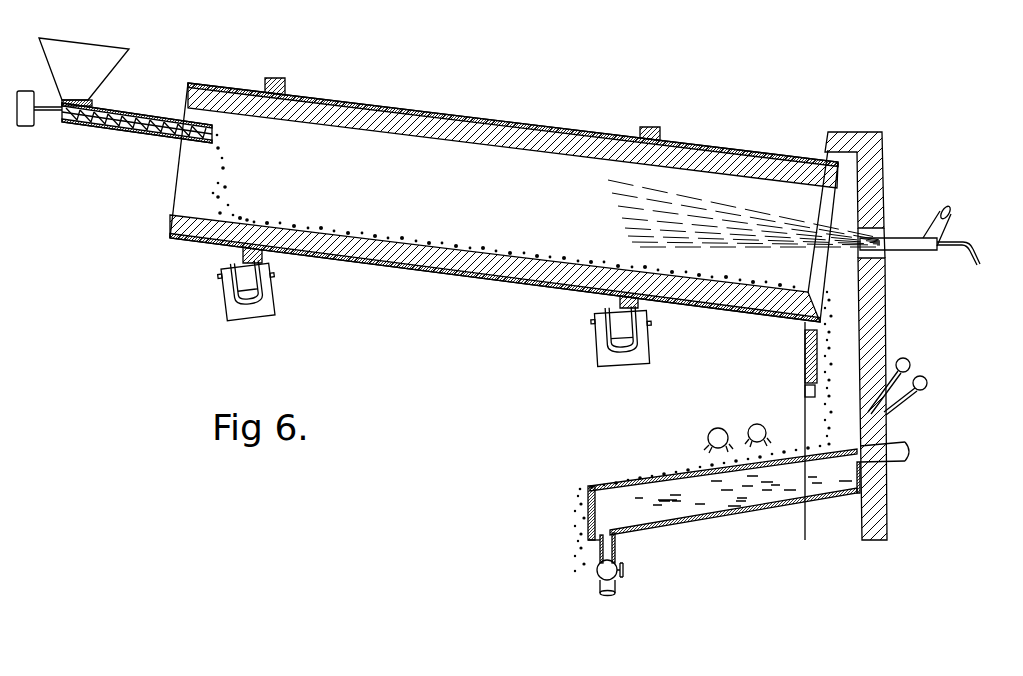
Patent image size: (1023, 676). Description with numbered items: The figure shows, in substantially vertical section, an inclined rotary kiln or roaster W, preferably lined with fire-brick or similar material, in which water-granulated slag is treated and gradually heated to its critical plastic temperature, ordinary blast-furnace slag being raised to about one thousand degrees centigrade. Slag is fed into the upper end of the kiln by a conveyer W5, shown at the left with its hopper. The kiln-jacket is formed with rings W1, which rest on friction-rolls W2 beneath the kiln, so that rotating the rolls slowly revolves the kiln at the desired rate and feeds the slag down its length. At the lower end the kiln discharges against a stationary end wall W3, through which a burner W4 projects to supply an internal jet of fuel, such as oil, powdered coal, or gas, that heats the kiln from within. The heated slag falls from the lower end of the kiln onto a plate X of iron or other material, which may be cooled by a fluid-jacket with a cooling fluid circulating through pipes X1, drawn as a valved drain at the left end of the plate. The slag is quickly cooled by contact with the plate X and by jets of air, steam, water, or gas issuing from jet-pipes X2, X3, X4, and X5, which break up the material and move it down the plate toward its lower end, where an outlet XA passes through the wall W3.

The inclined rotary kiln or roaster W is at (397, 110).
The rings W1 is at (662, 134).
The friction-rolls W2 is at (630, 334).
The stationary end wall W3 is at (868, 160).
The burner W4 is at (918, 242).
The conveyer W5 is at (123, 117).
The plate X is at (633, 483).
The pipes X1 is at (612, 588).
The jet-pipe X2 is at (884, 391).
The jet-pipe X3 is at (910, 365).
The jet-pipe X4 is at (758, 449).
The jet-pipe X5 is at (718, 453).
The outlet pipe through wall XA is at (897, 455).